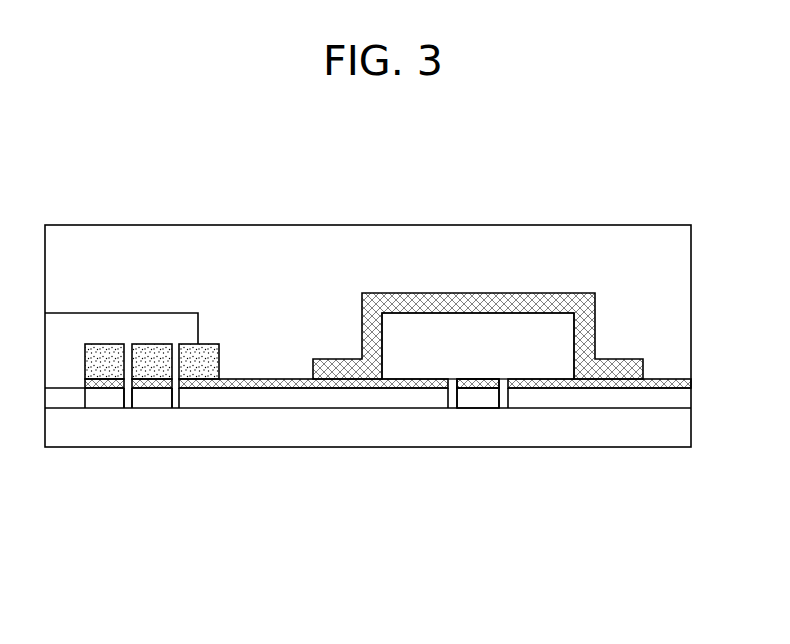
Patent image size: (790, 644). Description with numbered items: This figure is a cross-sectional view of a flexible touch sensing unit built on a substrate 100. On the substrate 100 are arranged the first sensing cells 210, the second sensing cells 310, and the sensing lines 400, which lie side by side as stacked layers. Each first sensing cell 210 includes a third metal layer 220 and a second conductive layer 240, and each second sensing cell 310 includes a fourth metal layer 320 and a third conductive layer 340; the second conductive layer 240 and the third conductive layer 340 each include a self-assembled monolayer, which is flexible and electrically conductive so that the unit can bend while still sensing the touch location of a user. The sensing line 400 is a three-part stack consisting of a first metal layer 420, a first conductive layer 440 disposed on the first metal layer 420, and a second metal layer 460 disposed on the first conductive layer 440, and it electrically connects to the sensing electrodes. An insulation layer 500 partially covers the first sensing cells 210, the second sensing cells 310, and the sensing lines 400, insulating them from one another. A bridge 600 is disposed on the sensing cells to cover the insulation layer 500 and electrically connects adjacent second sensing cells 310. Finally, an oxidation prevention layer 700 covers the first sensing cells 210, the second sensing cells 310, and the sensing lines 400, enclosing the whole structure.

The substrate 100 is at (618, 433).
The first sensing cell 210 is at (484, 463).
The third metal layer 220 is at (463, 404).
The second conductive layer 240 is at (485, 389).
The second sensing cell 310 is at (368, 463).
The fourth metal layer 320 is at (263, 400).
The third conductive layer 340 is at (320, 388).
The sensing line 400 is at (152, 446).
The first metal layer 420 is at (162, 406).
The first conductive layer 440 is at (150, 390).
The second metal layer 460 is at (145, 378).
The insulation layer 500 is at (427, 328).
The bridge 600 is at (505, 296).
The oxidation prevention layer 700 is at (613, 240).